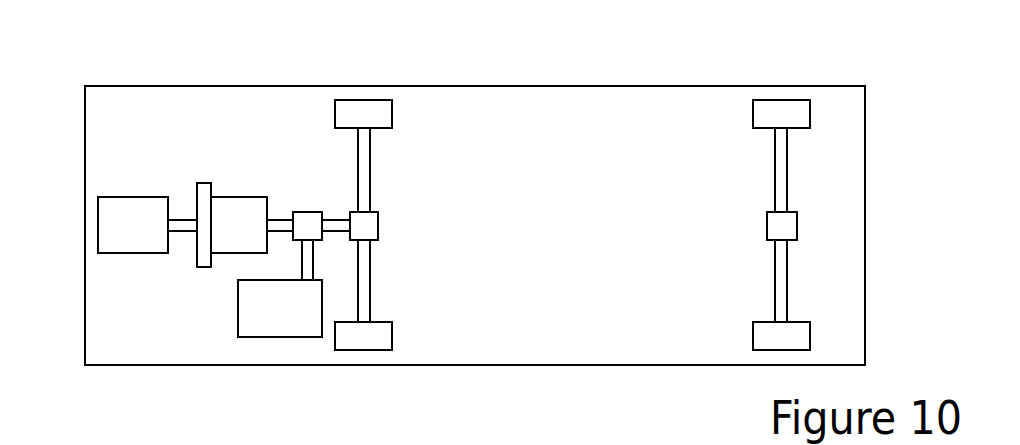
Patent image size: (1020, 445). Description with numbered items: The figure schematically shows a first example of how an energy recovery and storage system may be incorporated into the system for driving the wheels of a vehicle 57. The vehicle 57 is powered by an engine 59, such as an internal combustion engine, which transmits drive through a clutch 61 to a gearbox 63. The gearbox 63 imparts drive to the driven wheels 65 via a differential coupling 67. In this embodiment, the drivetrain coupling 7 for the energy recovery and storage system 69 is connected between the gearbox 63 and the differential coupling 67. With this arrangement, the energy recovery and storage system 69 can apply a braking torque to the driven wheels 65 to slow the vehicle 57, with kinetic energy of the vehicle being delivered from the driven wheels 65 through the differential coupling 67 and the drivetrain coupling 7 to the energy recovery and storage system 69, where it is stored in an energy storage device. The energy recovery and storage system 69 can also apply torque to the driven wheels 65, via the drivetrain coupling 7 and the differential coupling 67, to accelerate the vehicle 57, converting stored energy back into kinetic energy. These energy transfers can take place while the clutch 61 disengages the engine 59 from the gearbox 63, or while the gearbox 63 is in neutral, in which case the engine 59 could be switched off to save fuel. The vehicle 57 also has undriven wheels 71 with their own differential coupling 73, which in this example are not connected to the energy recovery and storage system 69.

The vehicle 57 is at (503, 86).
The engine 59 is at (113, 197).
The clutch 61 is at (205, 183).
The gearbox 63 is at (253, 197).
The drivetrain coupling 7 is at (310, 212).
The driven wheels 65 is at (377, 100).
The differential coupling 67 is at (378, 227).
The energy recovery and storage system 69 is at (238, 308).
The undriven wheels 71 is at (795, 100).
The differential coupling for the undriven wheels 73 is at (767, 225).